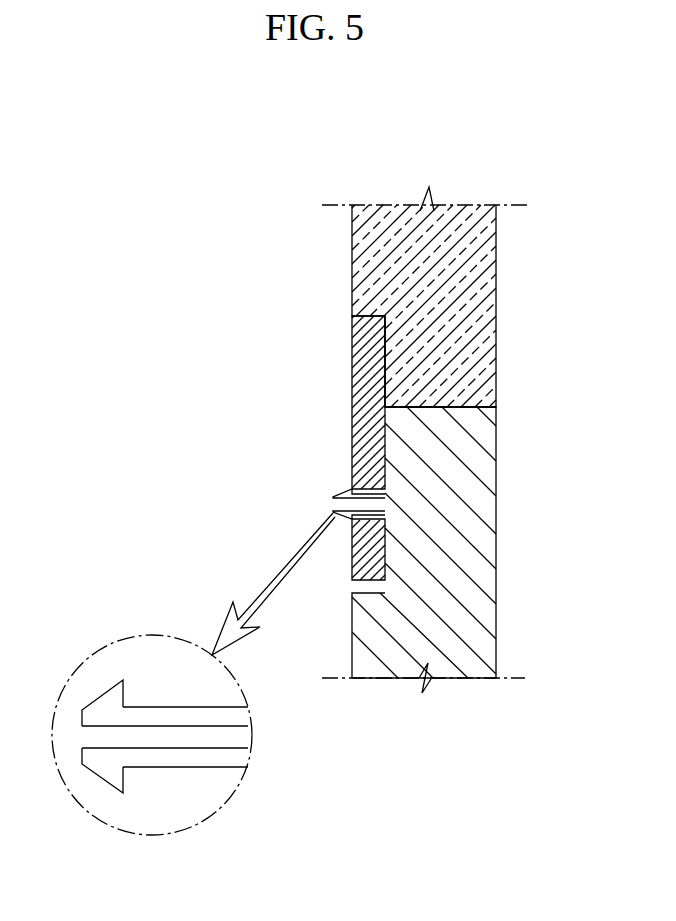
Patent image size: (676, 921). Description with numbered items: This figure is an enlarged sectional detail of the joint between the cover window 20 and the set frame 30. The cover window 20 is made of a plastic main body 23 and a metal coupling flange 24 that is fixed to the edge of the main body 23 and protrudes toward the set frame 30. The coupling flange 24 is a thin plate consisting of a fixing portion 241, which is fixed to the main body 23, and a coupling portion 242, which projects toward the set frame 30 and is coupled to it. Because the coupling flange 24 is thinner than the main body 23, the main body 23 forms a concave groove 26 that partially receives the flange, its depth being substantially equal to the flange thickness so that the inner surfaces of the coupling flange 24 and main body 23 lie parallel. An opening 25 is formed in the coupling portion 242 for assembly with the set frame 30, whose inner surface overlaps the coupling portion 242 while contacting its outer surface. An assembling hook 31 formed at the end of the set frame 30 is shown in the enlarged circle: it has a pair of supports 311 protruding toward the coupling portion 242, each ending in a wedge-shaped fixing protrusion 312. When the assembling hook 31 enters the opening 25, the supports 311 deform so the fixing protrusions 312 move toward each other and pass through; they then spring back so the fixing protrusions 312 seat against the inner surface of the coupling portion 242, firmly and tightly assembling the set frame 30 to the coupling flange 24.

The cover window 20 is at (366, 392).
The main body 23 is at (352, 275).
The coupling flange 24 is at (308, 448).
The fixing portion 241 is at (352, 373).
The coupling portion 242 is at (331, 513).
The opening 25 is at (377, 504).
The concave groove 26 is at (382, 377).
The set frame 30 is at (485, 582).
The assembling hook 31 is at (193, 751).
The support 311 is at (243, 717).
The fixing protrusion 312 is at (102, 768).